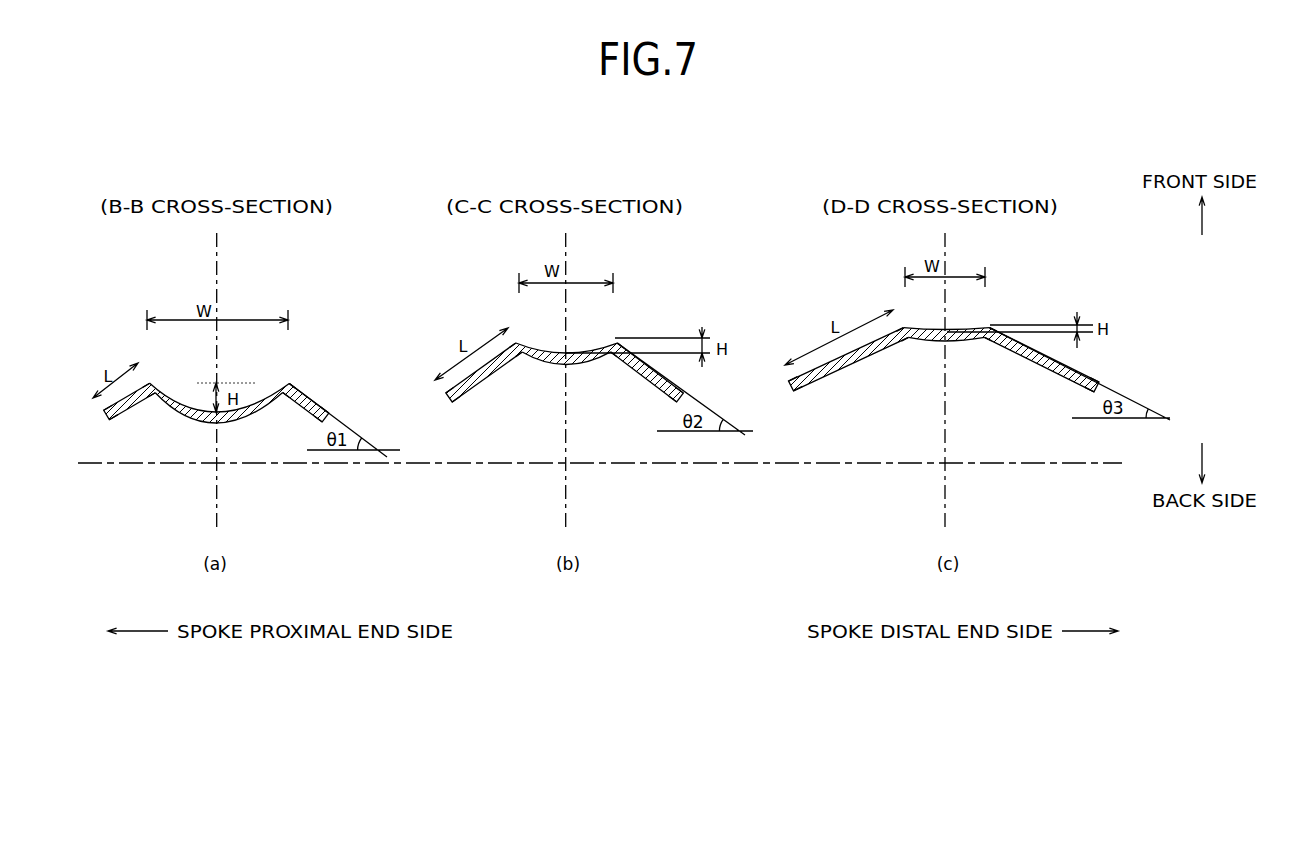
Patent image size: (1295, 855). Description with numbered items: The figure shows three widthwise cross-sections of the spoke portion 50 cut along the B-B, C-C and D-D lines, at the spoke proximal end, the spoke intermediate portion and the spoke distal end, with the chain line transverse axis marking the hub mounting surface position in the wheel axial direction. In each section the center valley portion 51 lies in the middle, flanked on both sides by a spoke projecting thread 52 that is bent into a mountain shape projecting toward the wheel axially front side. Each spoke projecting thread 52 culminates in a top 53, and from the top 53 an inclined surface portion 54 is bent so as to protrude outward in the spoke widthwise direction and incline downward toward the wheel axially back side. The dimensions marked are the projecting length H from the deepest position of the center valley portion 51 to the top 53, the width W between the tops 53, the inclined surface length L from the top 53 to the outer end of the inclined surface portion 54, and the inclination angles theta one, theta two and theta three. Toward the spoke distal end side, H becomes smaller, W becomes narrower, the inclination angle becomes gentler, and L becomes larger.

The spoke portion 50 is at (302, 287).
The center valley portion 51 is at (183, 402).
The spoke projecting thread 52 is at (111, 353).
The top 53 is at (152, 383).
The inclined surface portion 54 is at (122, 397).